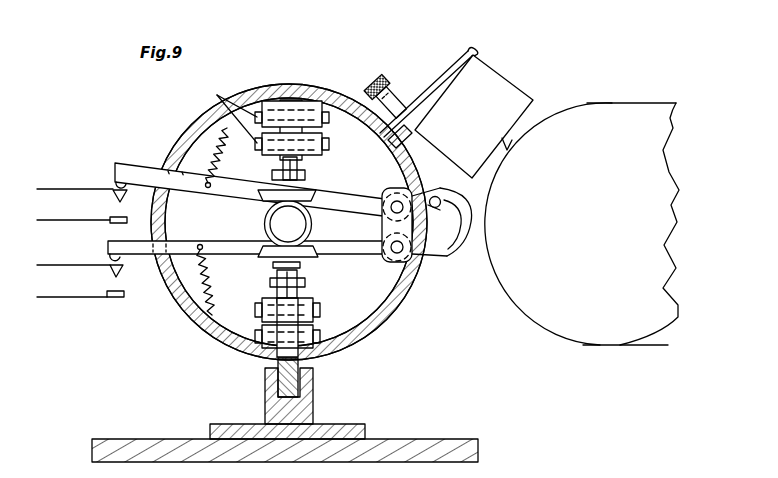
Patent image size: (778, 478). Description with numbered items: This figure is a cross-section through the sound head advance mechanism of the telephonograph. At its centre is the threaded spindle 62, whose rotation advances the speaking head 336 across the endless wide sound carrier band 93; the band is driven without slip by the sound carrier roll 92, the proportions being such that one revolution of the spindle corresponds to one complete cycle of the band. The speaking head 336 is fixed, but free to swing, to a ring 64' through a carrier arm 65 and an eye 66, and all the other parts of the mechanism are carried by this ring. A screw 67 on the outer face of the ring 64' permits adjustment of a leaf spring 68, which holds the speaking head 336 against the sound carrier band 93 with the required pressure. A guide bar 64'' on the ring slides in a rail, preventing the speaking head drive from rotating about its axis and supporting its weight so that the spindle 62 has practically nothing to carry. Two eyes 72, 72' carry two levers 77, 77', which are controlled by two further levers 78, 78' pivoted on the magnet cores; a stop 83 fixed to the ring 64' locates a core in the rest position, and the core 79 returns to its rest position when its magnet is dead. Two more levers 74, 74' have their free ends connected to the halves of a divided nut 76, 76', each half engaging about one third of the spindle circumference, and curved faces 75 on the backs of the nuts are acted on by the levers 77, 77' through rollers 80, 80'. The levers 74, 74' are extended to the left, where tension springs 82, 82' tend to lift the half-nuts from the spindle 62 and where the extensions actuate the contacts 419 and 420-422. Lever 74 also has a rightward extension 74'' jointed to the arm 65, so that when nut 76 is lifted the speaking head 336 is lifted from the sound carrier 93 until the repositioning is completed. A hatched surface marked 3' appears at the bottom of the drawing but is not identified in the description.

The floor / base surface 3' is at (307, 450).
The threaded spindle 62 is at (279, 222).
The ring 64' is at (289, 226).
The guide bar 64'' is at (268, 396).
The speaking head carrier arm 65 is at (455, 182).
The eye 66 is at (431, 212).
The screw 67 is at (371, 82).
The leaf spring 68 is at (428, 84).
The eye 72 is at (261, 377).
The eye 72' is at (286, 96).
The lever 74 is at (246, 262).
The lever 74' is at (249, 177).
The lever extension 74'' is at (448, 223).
The curved face 75 is at (280, 266).
The half-nut 76 is at (297, 263).
The half-nut 76' is at (302, 186).
The lever 77 is at (300, 327).
The lever 77' is at (288, 113).
The lever 78 is at (302, 304).
The lever 78' is at (307, 140).
The core 79 is at (257, 317).
The roller 80 is at (267, 287).
The roller 80' is at (268, 167).
The tension spring 82 is at (175, 284).
The tension spring 82' is at (194, 150).
The stop 83 is at (298, 410).
The sound carrier roll 92 is at (605, 112).
The sound carrier band 93 is at (645, 103).
The speaking head 336 is at (490, 82).
The contact 419 is at (58, 267).
The contacts 420-422 is at (50, 223).